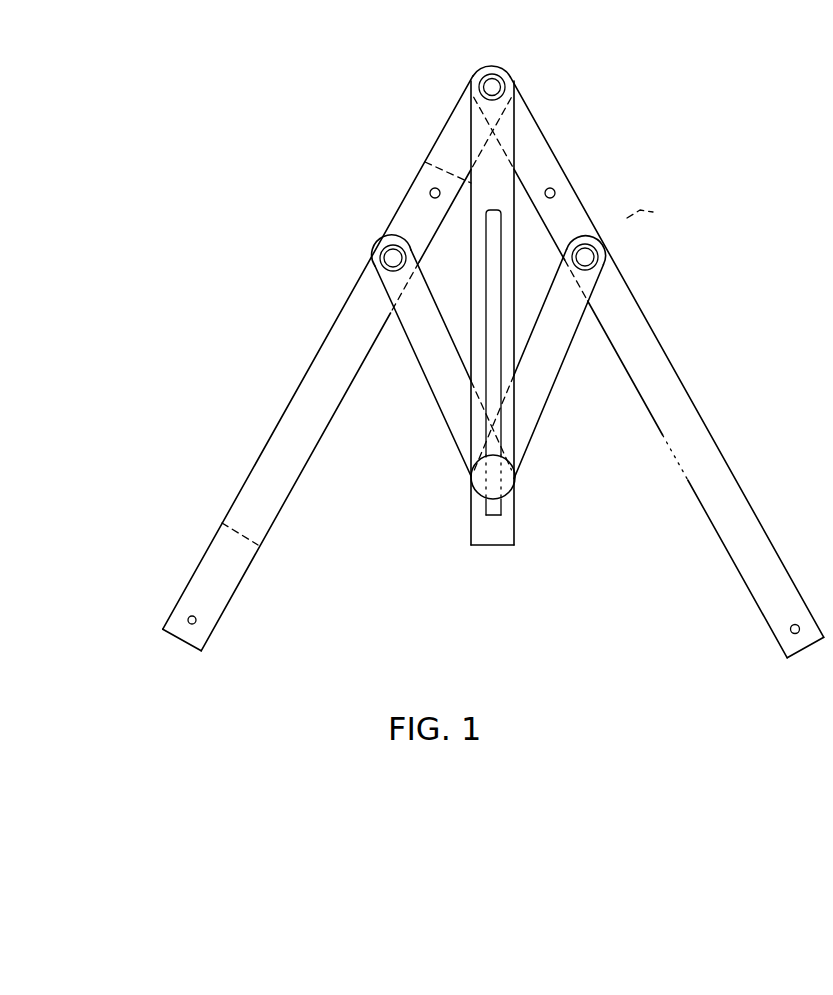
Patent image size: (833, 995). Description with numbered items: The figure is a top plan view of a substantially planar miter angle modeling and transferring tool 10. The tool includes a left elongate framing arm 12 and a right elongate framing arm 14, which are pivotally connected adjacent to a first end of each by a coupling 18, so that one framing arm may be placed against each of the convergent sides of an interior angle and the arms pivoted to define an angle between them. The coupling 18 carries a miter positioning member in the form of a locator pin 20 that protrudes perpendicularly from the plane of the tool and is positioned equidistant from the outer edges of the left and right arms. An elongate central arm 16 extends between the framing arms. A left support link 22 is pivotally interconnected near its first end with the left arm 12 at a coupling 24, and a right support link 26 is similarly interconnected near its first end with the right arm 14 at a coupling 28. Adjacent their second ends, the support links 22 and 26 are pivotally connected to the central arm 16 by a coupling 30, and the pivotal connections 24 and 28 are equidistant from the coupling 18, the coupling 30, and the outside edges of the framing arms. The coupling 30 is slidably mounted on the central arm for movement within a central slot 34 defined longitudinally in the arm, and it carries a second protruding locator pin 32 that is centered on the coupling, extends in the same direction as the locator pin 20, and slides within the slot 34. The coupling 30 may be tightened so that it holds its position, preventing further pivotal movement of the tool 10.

The miter angle modeling and transferring tool 10 is at (485, 368).
The left elongate framing arm 12 is at (220, 565).
The right elongate framing arm 14 is at (740, 490).
The elongate central arm 16 is at (472, 183).
The coupling 18 is at (477, 82).
The locator pin 20 is at (500, 87).
The left support link 22 is at (432, 397).
The coupling 24 is at (392, 258).
The right support link 26 is at (553, 387).
The coupling 28 is at (590, 257).
The coupling 30 is at (475, 486).
The locator pin 32 is at (497, 478).
The central slot 34 is at (498, 513).